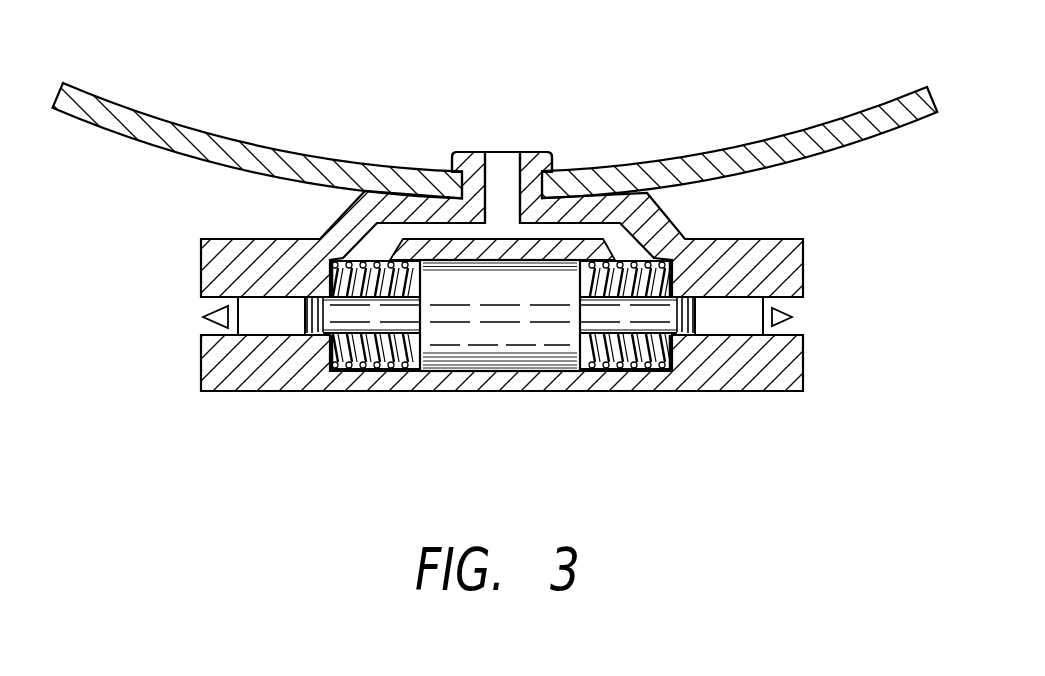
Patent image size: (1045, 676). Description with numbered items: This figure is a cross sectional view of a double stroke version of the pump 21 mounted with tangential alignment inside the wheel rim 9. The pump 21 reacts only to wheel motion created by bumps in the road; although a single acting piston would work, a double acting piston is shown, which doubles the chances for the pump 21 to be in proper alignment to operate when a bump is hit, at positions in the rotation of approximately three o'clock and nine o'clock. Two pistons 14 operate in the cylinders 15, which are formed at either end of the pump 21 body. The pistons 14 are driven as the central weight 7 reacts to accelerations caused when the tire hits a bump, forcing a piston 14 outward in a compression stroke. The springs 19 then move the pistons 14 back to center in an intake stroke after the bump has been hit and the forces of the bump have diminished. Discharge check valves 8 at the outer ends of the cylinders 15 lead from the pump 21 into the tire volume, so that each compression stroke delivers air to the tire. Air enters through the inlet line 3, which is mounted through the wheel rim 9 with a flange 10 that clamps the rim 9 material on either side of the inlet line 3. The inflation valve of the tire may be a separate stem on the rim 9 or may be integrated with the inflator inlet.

The inlet line 3 is at (503, 167).
The weight 7 is at (498, 357).
The discharge check valves 8 is at (203, 317).
The wheel rim 9 is at (189, 125).
The flange 10 is at (530, 153).
The pistons 14 is at (382, 372).
The cylinders 15 is at (262, 320).
The springs 19 is at (345, 372).
The pump 21 is at (822, 264).